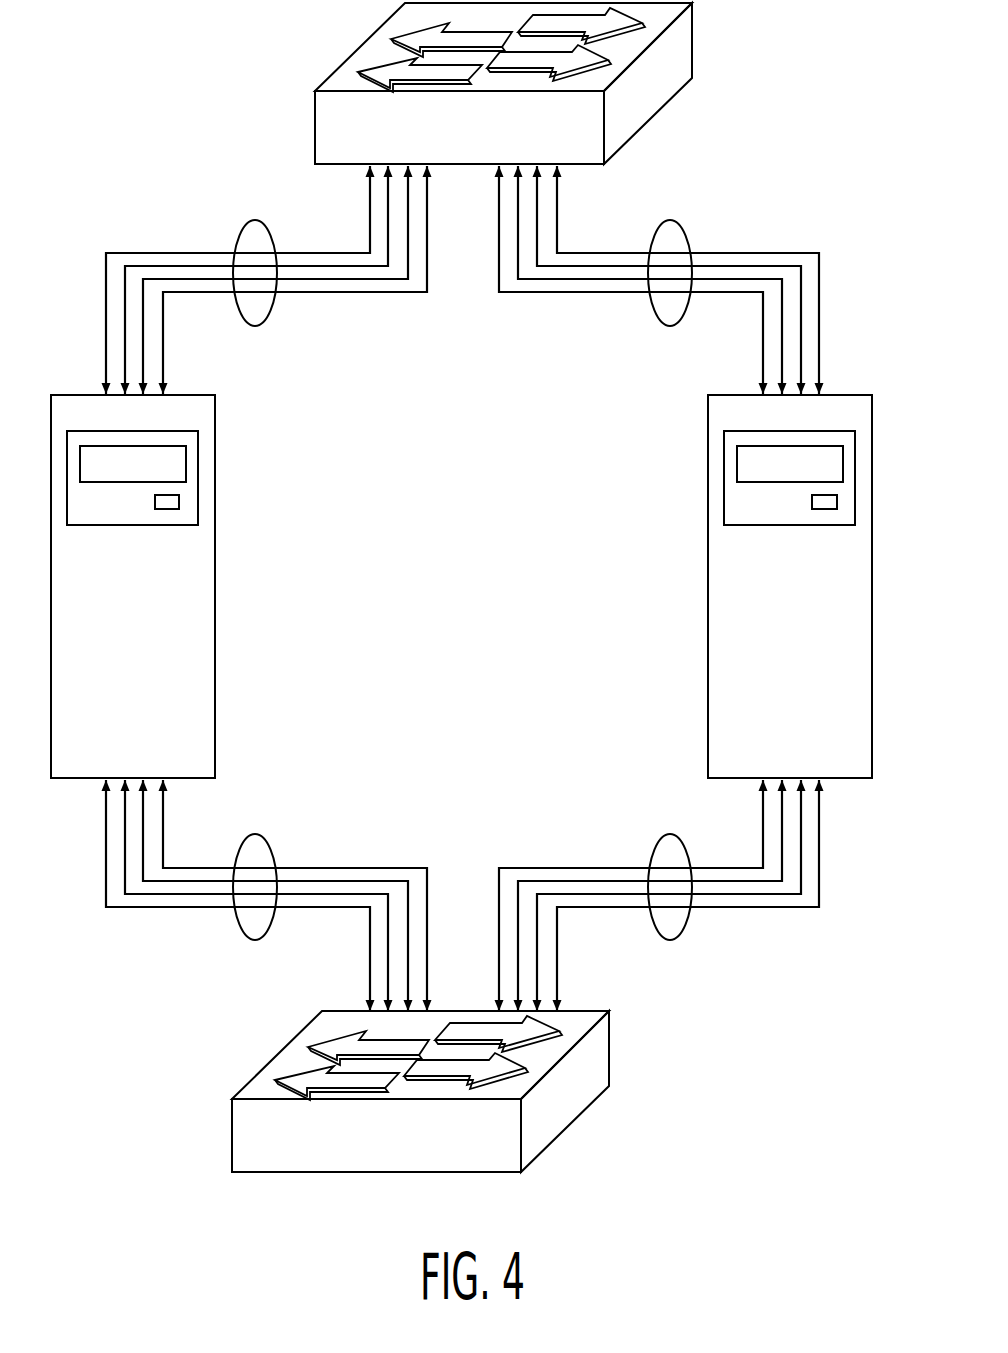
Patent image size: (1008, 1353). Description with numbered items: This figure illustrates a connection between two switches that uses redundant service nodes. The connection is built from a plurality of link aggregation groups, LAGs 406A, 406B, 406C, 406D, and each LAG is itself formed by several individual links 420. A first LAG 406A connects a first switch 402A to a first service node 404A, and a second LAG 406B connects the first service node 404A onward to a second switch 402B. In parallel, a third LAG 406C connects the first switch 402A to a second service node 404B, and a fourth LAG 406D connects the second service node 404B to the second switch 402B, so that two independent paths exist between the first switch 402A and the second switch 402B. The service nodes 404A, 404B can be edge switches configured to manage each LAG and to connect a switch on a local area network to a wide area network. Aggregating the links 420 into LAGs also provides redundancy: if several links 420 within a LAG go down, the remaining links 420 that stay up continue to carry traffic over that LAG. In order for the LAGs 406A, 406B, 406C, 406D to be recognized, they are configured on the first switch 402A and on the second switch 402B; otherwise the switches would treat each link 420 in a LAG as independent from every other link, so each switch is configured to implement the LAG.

The first switch 402A is at (587, 1113).
The second switch 402B is at (693, 37).
The first service node 404A is at (215, 583).
The second service node 404B is at (708, 588).
The first LAG 406A is at (240, 923).
The second LAG 406B is at (245, 220).
The third LAG 406C is at (693, 923).
The fourth LAG 406D is at (680, 220).
The links 420 is at (463, 572).